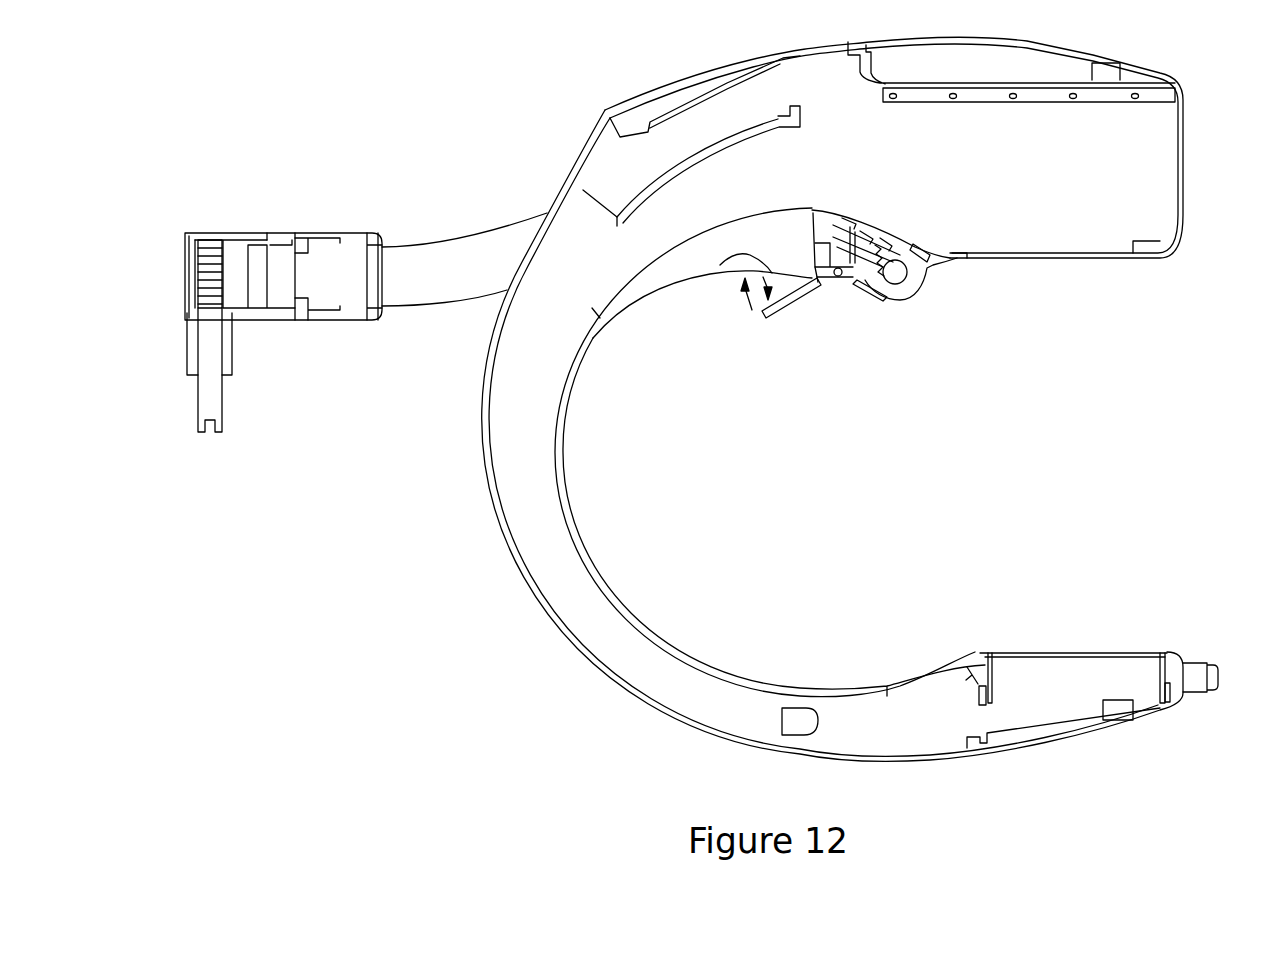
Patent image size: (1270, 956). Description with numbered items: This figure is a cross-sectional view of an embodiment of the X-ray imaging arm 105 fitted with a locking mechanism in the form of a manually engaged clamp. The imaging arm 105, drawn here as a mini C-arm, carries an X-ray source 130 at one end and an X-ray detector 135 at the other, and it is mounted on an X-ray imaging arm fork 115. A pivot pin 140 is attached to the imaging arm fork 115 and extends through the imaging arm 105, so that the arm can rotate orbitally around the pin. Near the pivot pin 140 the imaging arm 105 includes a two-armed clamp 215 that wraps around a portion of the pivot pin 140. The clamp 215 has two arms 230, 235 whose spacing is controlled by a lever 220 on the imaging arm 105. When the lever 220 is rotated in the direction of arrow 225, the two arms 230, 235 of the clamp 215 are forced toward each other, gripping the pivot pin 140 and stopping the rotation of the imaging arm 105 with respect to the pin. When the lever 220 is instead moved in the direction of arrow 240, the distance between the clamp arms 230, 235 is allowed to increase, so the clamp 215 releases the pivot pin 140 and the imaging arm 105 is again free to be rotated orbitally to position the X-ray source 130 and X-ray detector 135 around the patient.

The X-ray imaging arm 105 is at (450, 535).
The X-ray imaging arm fork 115 is at (449, 222).
The X-ray source 130 is at (1100, 279).
The X-ray detector 135 is at (1109, 631).
The pivot pin 140 is at (904, 278).
The two-armed clamp 215 is at (918, 300).
The lever 220 is at (775, 333).
The arrow 225 is at (748, 301).
The clamp arm 230 is at (858, 272).
The clamp arm 235 is at (843, 270).
The arrow 240 is at (773, 284).